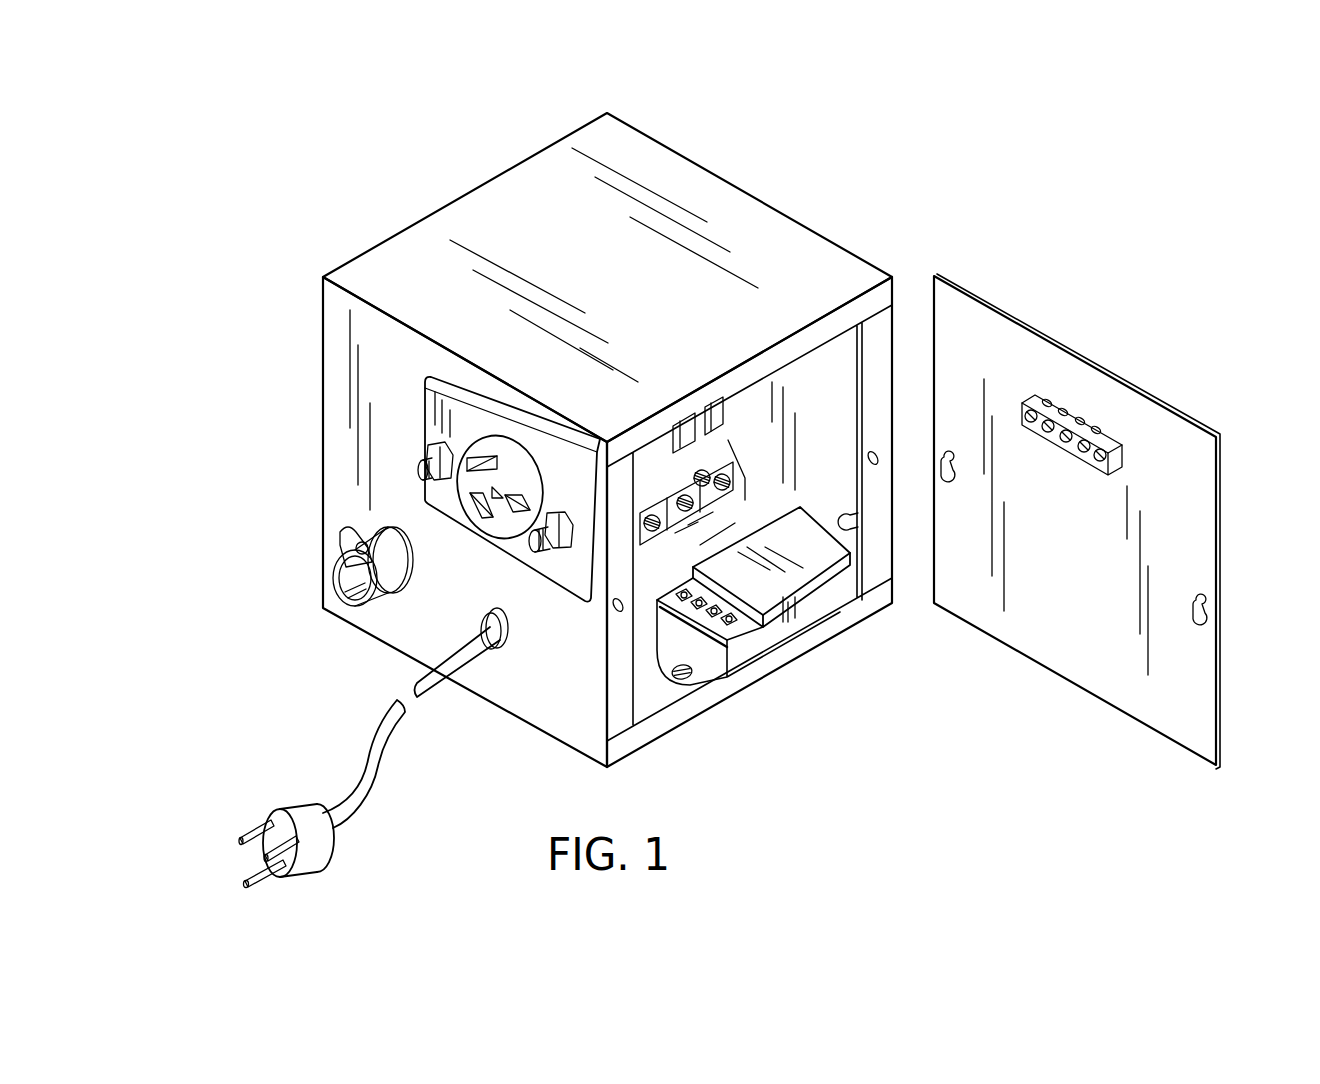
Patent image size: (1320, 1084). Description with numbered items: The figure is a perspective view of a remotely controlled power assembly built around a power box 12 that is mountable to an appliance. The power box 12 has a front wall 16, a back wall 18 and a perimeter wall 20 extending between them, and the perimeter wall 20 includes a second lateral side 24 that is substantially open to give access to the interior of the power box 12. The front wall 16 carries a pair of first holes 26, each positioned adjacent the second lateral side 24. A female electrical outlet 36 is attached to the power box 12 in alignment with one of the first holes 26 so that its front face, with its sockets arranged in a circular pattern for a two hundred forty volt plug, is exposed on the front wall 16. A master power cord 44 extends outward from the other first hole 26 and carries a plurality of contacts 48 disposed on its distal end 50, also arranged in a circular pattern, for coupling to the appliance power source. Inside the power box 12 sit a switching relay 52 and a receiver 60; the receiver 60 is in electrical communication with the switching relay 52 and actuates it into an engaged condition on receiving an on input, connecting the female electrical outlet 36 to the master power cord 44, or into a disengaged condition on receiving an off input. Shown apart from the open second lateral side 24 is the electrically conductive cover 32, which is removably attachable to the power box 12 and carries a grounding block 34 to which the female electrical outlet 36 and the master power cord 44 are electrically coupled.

The power box 12 is at (620, 120).
The front wall 16 is at (347, 442).
The back wall 18 is at (892, 277).
The perimeter wall 20 is at (520, 197).
The second lateral side 24 is at (743, 677).
The first holes 26 is at (322, 330).
The cover 32 is at (1217, 437).
The grounding block 34 is at (1070, 423).
The female electrical outlet 36 is at (458, 392).
The master power cord 44 is at (385, 717).
The contacts 48 is at (247, 884).
The distal end 50 is at (293, 807).
The switching relay 52 is at (730, 443).
The receiver 60 is at (808, 594).